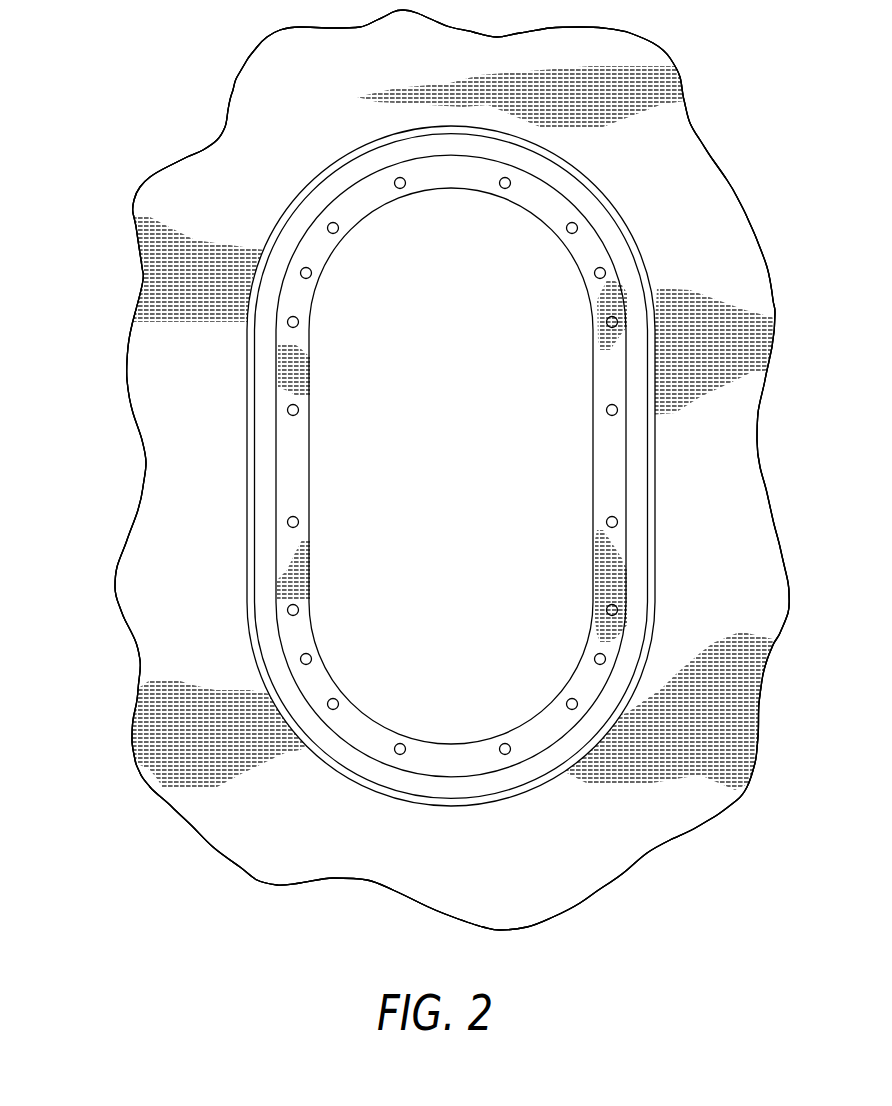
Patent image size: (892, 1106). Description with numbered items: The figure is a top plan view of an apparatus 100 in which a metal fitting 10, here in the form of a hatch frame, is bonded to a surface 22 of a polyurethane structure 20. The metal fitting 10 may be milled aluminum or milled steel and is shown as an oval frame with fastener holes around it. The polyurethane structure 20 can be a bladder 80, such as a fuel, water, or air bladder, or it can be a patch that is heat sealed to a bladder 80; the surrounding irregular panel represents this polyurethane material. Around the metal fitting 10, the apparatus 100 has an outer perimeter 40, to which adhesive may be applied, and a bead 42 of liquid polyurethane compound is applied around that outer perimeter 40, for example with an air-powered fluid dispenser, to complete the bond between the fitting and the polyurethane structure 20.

The apparatus 100 is at (437, 470).
The bladder 80 is at (693, 197).
The polyurethane structure 20 is at (207, 447).
The surface 22 is at (202, 470).
The bead 42 is at (658, 580).
The outer perimeter 40 is at (652, 512).
The metal fitting 10 is at (627, 468).